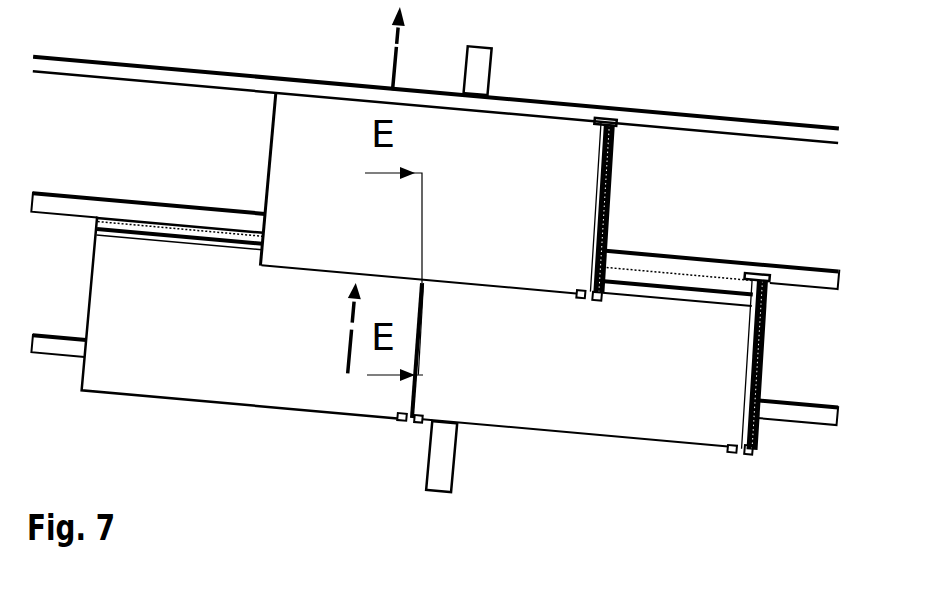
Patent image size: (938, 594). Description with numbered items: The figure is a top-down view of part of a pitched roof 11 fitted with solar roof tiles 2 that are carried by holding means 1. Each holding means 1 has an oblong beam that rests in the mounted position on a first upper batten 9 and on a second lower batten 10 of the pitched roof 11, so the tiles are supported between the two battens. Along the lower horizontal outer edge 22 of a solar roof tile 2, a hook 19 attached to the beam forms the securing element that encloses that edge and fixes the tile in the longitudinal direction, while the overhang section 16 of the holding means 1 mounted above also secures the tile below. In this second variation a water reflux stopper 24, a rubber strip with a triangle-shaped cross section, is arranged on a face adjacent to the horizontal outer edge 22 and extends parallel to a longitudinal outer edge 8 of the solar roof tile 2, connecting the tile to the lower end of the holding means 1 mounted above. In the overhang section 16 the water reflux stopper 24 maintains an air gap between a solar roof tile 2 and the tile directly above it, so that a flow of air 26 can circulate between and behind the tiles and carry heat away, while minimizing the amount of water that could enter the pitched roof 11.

The holding means 1 is at (719, 233).
The solar roof tile 2 is at (389, 230).
The longitudinal outer edge 8 is at (191, 138).
The first upper batten 9 is at (445, 150).
The second lower batten 10 is at (448, 287).
The pitched roof 11 is at (653, 251).
The overhang section 16 is at (140, 165).
The hook 19 is at (523, 406).
The horizontal outer edge 22 is at (741, 188).
The water reflux stopper 24 is at (406, 153).
The flow of air 26 is at (211, 215).